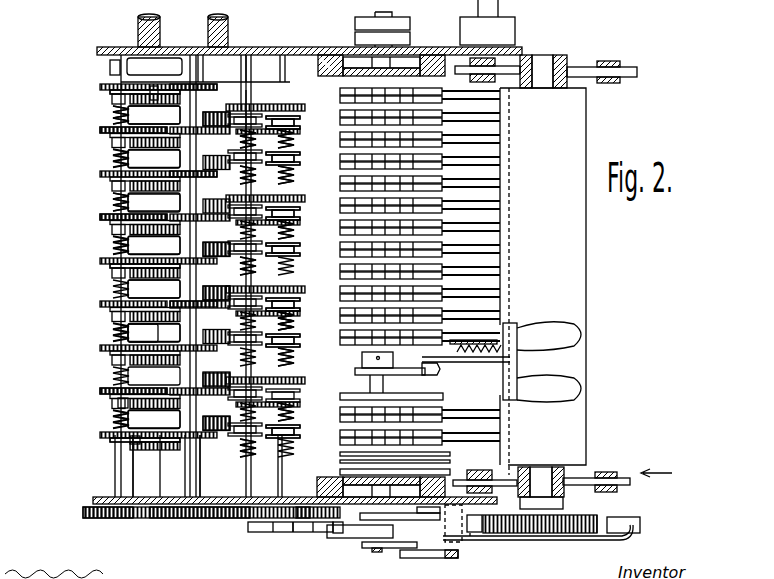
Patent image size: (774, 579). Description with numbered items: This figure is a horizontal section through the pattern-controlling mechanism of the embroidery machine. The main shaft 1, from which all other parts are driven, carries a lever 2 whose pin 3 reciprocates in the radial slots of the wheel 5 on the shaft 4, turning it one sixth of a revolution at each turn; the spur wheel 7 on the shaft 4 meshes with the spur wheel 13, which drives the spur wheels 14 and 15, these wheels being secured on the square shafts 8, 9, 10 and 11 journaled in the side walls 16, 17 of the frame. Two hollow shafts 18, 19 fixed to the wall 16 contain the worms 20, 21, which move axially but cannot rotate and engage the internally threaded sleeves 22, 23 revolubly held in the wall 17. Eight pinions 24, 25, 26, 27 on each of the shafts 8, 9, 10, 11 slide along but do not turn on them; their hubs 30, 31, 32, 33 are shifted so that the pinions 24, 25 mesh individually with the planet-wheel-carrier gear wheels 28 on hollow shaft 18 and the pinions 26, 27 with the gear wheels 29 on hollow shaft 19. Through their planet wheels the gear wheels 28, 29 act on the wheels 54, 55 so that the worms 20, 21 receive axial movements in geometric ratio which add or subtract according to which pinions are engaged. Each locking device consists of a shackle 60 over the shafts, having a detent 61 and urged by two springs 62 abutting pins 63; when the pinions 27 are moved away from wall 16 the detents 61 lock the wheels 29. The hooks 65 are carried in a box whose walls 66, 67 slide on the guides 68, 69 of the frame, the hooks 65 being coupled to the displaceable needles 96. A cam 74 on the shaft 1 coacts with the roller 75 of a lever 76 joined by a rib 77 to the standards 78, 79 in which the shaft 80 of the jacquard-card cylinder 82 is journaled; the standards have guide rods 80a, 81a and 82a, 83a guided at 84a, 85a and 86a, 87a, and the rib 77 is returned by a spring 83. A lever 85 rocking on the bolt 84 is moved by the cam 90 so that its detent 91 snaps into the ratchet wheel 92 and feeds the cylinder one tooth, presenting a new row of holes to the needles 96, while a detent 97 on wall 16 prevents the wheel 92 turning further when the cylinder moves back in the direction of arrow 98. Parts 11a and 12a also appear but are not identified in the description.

The main shaft 1 is at (382, 23).
The lever 2 is at (350, 538).
The pin 3 is at (333, 530).
The shaft 4 is at (303, 532).
The slotted wheel 5 is at (262, 532).
The spur wheel 7 is at (300, 518).
The shaft 8 is at (290, 76).
The shaft 9 is at (247, 74).
The shaft 10 is at (211, 70).
The shaft 11 is at (110, 66).
The block 11a is at (392, 548).
The bar 12a is at (408, 558).
The spur wheel 13 is at (255, 518).
The spur wheel 14 is at (203, 518).
The spur wheel 15 is at (132, 518).
The side wall 16 is at (298, 497).
The side wall 17 is at (309, 41).
The hollow shaft 18 is at (213, 466).
The hollow shaft 19 is at (145, 466).
The worm 20 is at (210, 26).
The worm 21 is at (148, 23).
The internally threaded sleeve 22 is at (243, 58).
The internally threaded sleeve 23 is at (160, 60).
The pinions 24 is at (298, 107).
The pinions 25 is at (257, 90).
The pinions 26 is at (208, 88).
The pinions 27 is at (104, 130).
The gear wheels 28 is at (215, 126).
The gear wheels 29 is at (155, 365).
The hub 30 is at (300, 120).
The hub 31 is at (298, 160).
The hub 32 is at (182, 418).
The hub 33 is at (112, 95).
The wheel 54 is at (215, 242).
The wheel 55 is at (101, 299).
The shackle 60 is at (113, 198).
The detent 61 is at (153, 88).
The springs 62 is at (292, 136).
The pins 63 is at (113, 114).
The hooks 65 is at (340, 136).
The wall 66 is at (330, 477).
The wall 67 is at (336, 76).
The guide 68 is at (434, 477).
The guide 69 is at (434, 55).
The cam 74 is at (393, 372).
The roller 75 is at (432, 376).
The lever 76 is at (474, 363).
The rib 77 is at (514, 361).
The standard 78 is at (565, 485).
The standard 79 is at (562, 56).
The shaft 80 is at (566, 356).
The guide rod 80a is at (462, 480).
The guide rod 81a is at (590, 478).
The cylinder 82 is at (543, 281).
The guide rod 82a is at (465, 66).
The spring 83 is at (490, 342).
The guide rod 83a is at (595, 67).
The bolt 84 is at (445, 533).
The guide 84a is at (492, 472).
The lever 85 is at (558, 540).
The guide 85a is at (612, 492).
The guide 86a is at (503, 58).
The guide 87a is at (618, 62).
The cam 90 is at (392, 520).
The detent 91 is at (630, 519).
The ratchet wheel 92 is at (585, 515).
The needles 96 is at (498, 205).
The detent 97 is at (474, 532).
The arrow 98 is at (656, 464).